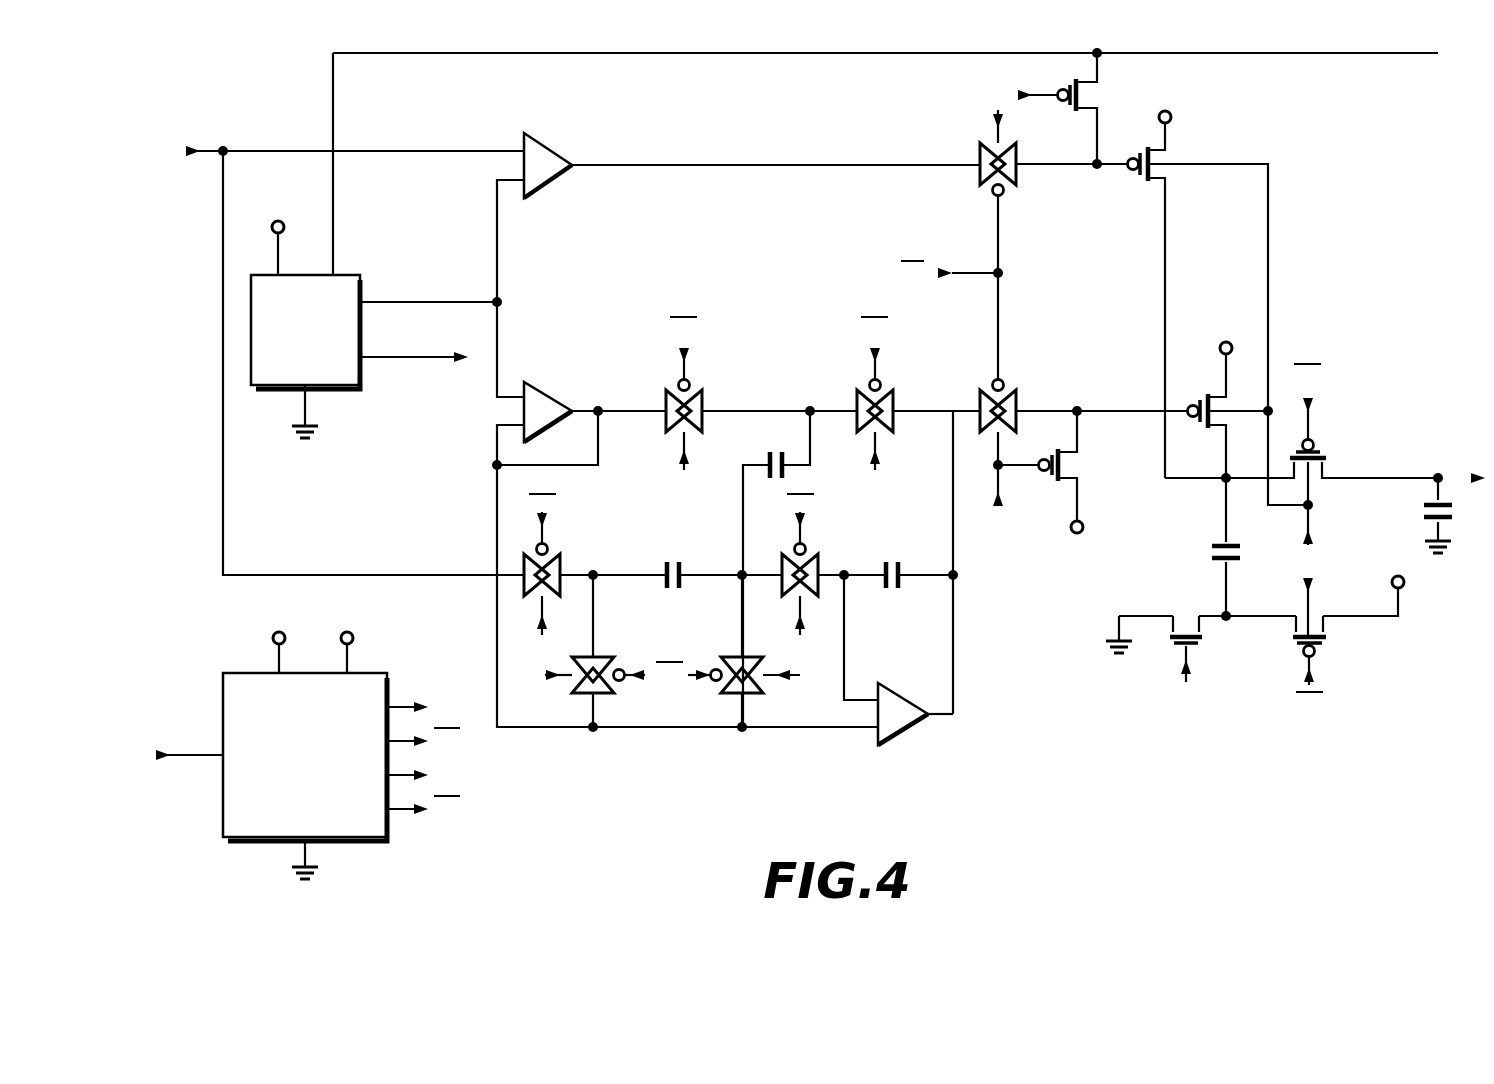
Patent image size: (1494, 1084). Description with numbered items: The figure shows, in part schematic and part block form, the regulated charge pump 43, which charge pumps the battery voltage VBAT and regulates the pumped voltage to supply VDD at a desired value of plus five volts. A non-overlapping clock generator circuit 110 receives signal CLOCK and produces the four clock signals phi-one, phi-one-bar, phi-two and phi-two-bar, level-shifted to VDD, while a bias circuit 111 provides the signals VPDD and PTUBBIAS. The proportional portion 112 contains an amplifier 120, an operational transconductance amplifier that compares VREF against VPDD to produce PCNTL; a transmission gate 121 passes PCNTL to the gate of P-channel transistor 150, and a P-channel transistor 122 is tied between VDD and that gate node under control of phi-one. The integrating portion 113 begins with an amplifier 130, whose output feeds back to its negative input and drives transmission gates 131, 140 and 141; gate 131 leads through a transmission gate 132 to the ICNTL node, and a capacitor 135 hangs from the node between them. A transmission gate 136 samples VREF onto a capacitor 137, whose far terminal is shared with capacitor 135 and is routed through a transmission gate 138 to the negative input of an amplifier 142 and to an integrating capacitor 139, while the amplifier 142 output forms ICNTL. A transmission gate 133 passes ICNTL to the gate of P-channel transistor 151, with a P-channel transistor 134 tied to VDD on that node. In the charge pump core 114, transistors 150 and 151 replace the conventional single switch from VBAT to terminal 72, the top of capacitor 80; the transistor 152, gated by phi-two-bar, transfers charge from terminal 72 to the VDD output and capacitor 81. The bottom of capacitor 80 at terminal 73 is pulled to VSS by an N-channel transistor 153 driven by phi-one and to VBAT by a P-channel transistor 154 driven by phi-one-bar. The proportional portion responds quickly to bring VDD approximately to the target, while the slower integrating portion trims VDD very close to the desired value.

The regulated charge pump 43 is at (851, 838).
The terminal 72 is at (1224, 512).
The terminal 73 is at (1224, 592).
The capacitor 80 is at (1212, 550).
The capacitor 81 is at (1428, 512).
The non-overlapping clock generator circuit 110 is at (265, 673).
The bias circuit 111 is at (362, 388).
The proportional portion 112 is at (475, 130).
The integrating portion 113 is at (465, 593).
The charge pump core 114 is at (1140, 712).
The amplifier 120 is at (550, 143).
The transmission gate 121 is at (982, 180).
The P-channel transistor 122 is at (1071, 109).
The amplifier 130 is at (550, 392).
The transmission gate 131 is at (703, 395).
The transmission gate 132 is at (858, 393).
The transmission gate 133 is at (1018, 395).
The P-channel transistor 134 is at (1052, 480).
The capacitor 135 is at (770, 455).
The transmission gate 136 is at (560, 556).
The capacitor 137 is at (680, 560).
The transmission gate 138 is at (818, 556).
The capacitor 139 is at (898, 560).
The transmission gate 140 is at (606, 696).
The transmission gate 141 is at (762, 696).
The amplifier 142 is at (905, 697).
The P-channel transistor 150 is at (1141, 180).
The P-channel transistor 151 is at (1205, 392).
The P-channel transistor 152 is at (1326, 448).
The N-channel transistor 153 is at (1203, 641).
The P-channel transistor 154 is at (1328, 641).